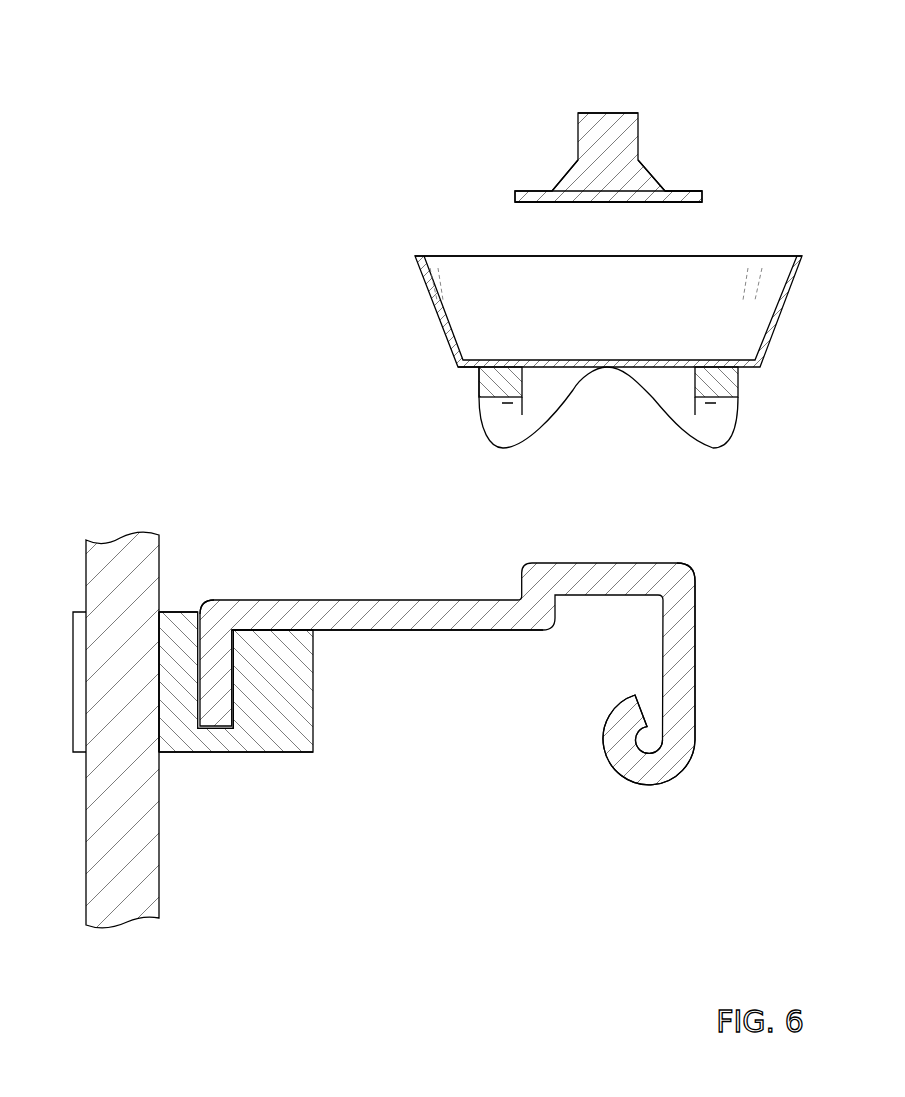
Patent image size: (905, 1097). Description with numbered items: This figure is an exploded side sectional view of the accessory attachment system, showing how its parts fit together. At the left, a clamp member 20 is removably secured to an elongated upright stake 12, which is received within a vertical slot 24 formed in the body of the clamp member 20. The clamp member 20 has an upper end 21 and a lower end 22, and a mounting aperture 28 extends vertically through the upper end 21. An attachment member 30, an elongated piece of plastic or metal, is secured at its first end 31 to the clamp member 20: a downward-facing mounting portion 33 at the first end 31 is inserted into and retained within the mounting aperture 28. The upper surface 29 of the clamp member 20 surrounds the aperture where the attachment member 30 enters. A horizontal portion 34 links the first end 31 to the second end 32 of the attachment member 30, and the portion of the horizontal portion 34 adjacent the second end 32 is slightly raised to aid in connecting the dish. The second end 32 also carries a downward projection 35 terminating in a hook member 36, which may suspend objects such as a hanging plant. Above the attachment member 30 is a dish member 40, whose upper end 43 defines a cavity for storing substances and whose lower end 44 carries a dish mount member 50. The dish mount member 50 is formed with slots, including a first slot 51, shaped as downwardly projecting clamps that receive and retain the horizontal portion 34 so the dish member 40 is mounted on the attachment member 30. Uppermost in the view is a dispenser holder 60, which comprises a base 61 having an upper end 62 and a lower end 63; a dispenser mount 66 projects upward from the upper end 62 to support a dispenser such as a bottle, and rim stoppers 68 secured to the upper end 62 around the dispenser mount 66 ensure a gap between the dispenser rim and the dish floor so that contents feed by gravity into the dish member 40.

The stake 12 is at (135, 873).
The clamp member 20 is at (315, 736).
The upper end 21 is at (177, 610).
The lower end 22 is at (290, 753).
The vertical slot 24 is at (160, 705).
The mounting aperture 28 is at (237, 686).
The upper block surface 29 is at (287, 632).
The attachment member 30 is at (433, 611).
The first end 31 is at (213, 602).
The second end 32 is at (687, 567).
The mounting portion 33 is at (213, 707).
The horizontal portion 34 is at (410, 632).
The downward projection 35 is at (697, 667).
The hook member 36 is at (630, 783).
The dish member 40 is at (437, 312).
The upper end 43 is at (433, 255).
The lower end 44 is at (463, 370).
The dish mount member 50 is at (572, 400).
The first slot 51 is at (492, 401).
The dispenser holder 60 is at (640, 135).
The base 61 is at (702, 197).
The upper end 62 is at (683, 190).
The lower end 63 is at (663, 202).
The dispenser mount 66 is at (608, 111).
The rim stoppers 68 is at (561, 176).